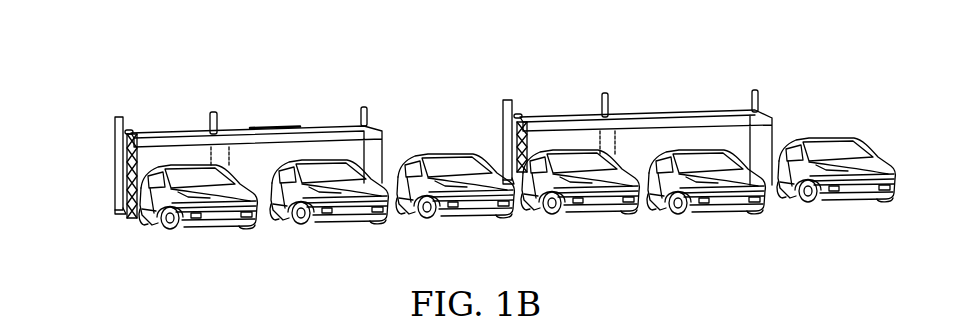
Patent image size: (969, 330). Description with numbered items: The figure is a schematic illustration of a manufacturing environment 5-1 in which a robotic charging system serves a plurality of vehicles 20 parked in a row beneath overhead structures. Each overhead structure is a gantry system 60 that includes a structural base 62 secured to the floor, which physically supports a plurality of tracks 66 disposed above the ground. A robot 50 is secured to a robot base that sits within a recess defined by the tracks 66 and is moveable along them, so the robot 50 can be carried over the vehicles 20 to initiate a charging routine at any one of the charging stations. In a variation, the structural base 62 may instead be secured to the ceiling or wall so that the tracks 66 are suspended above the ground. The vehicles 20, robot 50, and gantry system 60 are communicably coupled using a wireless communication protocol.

The manufacturing environment 5-1 is at (122, 70).
The gantry system 60 is at (186, 113).
The tracks 66 is at (285, 121).
The structural base 62 is at (118, 149).
The robot 50 is at (118, 184).
The vehicles 20 is at (436, 141).